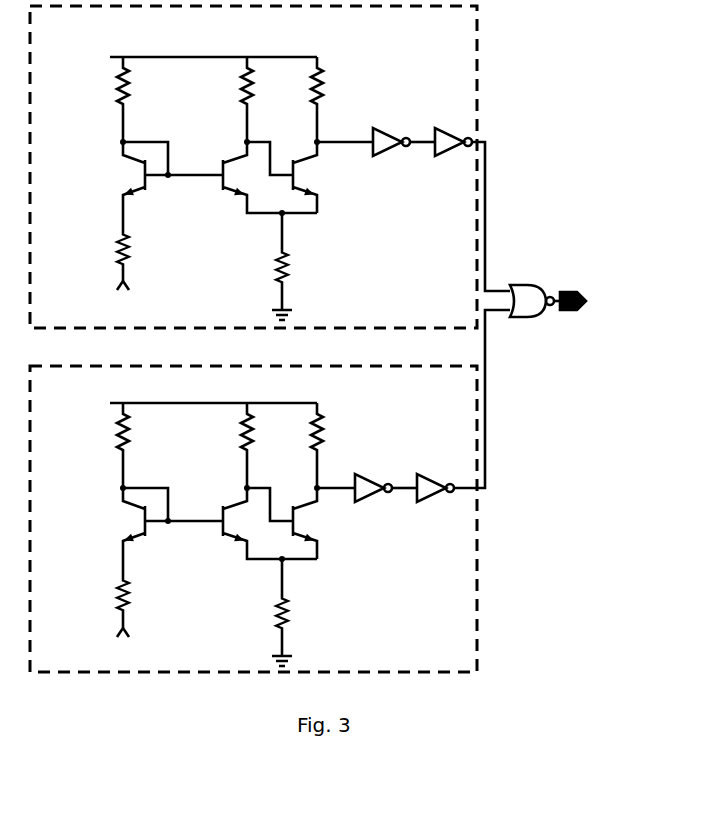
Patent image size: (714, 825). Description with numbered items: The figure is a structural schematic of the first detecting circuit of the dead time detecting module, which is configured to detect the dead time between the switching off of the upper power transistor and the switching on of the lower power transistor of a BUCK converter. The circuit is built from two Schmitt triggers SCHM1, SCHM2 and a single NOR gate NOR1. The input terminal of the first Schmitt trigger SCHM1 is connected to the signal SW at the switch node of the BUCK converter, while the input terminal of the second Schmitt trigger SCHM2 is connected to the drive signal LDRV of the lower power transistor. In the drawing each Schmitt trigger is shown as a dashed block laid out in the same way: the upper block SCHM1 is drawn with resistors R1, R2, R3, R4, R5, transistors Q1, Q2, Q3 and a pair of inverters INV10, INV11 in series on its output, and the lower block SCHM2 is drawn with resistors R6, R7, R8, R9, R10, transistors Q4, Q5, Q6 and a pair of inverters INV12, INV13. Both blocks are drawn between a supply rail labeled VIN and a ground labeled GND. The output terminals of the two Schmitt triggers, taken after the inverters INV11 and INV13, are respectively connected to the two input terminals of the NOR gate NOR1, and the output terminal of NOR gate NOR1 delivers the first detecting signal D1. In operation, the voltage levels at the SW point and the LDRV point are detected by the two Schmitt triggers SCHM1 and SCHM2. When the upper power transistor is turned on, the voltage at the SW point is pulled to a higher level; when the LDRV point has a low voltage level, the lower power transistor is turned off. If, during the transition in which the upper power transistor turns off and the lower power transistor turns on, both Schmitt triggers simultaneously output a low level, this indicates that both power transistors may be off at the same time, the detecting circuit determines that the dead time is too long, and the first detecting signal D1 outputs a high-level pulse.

The Schmitt trigger SCHM1 is at (253, 167).
The Schmitt trigger SCHM2 is at (253, 519).
The resistor R1 is at (106, 99).
The resistor R2 is at (231, 99).
The resistor R3 is at (300, 99).
The resistor R4 is at (138, 240).
The resistor R5 is at (297, 260).
The resistor R6 is at (106, 445).
The resistor R7 is at (231, 445).
The resistor R8 is at (300, 445).
The resistor R9 is at (138, 587).
The resistor R10 is at (301, 606).
The transistor Q1 is at (168, 169).
The transistor Q2 is at (270, 176).
The transistor Q3 is at (333, 176).
The transistor Q4 is at (168, 515).
The transistor Q5 is at (270, 522).
The transistor Q6 is at (324, 522).
The inverter INV10 is at (397, 134).
The inverter INV11 is at (467, 201).
The inverter INV12 is at (379, 480).
The inverter INV13 is at (462, 406).
The NOR gate NOR1 is at (532, 292).
The first detecting signal D1 is at (587, 301).
The input voltage supply VIN is at (196, 230).
The ground GND is at (301, 485).
The signal at the switch node SW is at (122, 297).
The drive signal of the lower power transistor LDRV is at (117, 643).